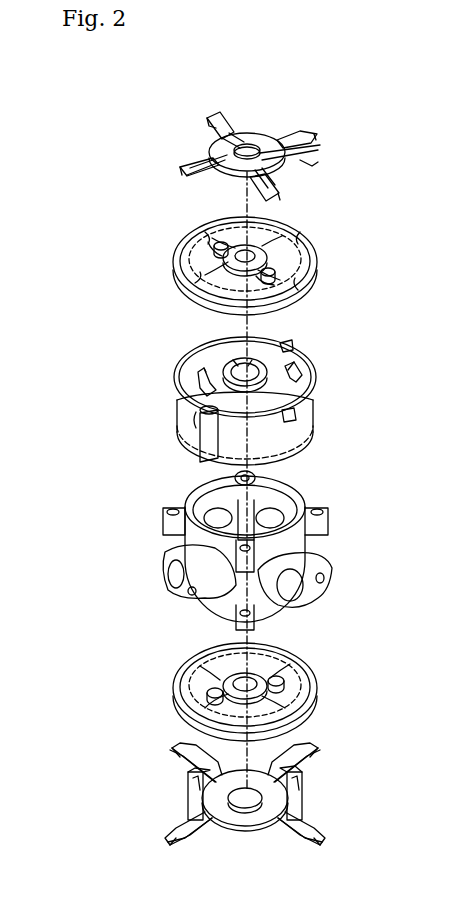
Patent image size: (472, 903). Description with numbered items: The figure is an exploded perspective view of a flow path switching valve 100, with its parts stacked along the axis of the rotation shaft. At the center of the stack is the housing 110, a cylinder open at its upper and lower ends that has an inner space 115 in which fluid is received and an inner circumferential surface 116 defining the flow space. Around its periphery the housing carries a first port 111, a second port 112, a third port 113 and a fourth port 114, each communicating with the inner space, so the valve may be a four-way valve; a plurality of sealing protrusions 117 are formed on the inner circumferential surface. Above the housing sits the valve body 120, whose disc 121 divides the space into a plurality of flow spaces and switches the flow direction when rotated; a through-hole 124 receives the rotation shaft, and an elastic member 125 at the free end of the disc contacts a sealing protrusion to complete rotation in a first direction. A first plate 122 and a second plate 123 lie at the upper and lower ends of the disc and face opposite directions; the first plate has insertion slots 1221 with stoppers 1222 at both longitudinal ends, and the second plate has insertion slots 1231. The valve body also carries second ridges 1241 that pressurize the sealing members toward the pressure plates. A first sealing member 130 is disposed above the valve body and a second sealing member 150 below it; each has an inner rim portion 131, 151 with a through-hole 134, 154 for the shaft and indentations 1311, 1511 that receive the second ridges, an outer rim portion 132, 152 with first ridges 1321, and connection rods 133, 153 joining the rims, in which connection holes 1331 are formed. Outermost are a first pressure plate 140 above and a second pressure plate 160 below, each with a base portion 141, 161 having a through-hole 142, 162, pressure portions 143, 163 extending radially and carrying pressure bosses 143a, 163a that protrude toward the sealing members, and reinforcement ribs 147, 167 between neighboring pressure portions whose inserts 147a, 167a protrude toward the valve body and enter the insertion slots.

The flow path switching valve 100 is at (134, 49).
The housing 110 is at (162, 495).
The first port 111 is at (186, 552).
The second port 112 is at (222, 515).
The third port 113 is at (312, 540).
The fourth port 114 is at (314, 598).
The inner space 115 is at (278, 498).
The inner circumferential surface 116 is at (306, 510).
The sealing protrusion 117 is at (250, 504).
The valve body 120 is at (165, 360).
The disc 121 is at (305, 444).
The first plate 122 is at (305, 375).
The second plate 123 is at (302, 430).
The through-hole 124 is at (294, 362).
The elastic member 125 is at (286, 343).
The insertion slot 1221 is at (300, 368).
The stopper 1222 is at (201, 366).
The insertion slot 1231 is at (300, 415).
The second ridge 1241 is at (234, 358).
The first sealing member 130 is at (173, 232).
The inner rim portion 131 is at (306, 247).
The outer rim portion 132 is at (318, 258).
The connection rod 133 is at (222, 238).
The through-hole 134 is at (223, 262).
The indentation 1311 is at (262, 240).
The first ridge 1321 is at (205, 232).
The connection hole 1331 is at (186, 251).
The first pressure plate 140 is at (190, 104).
The base portion 141 is at (256, 142).
The through-hole 142 is at (247, 145).
The pressure portion 143 is at (219, 115).
The pressure boss 143a is at (302, 148).
The reinforcement rib 147 is at (212, 142).
The insert 147a is at (292, 170).
The second sealing member 150 is at (165, 650).
The inner rim portion 151 is at (262, 660).
The outer rim portion 152 is at (198, 706).
The connection rod 153 is at (207, 690).
The through-hole 154 is at (298, 702).
The indentation 1511 is at (210, 662).
The second pressure plate 160 is at (166, 798).
The base portion 161 is at (238, 822).
The through-hole 162 is at (250, 806).
The pressure portion 163 is at (213, 760).
The pressure boss 163a is at (176, 755).
The reinforcement rib 167 is at (188, 806).
The insert 167a is at (186, 780).